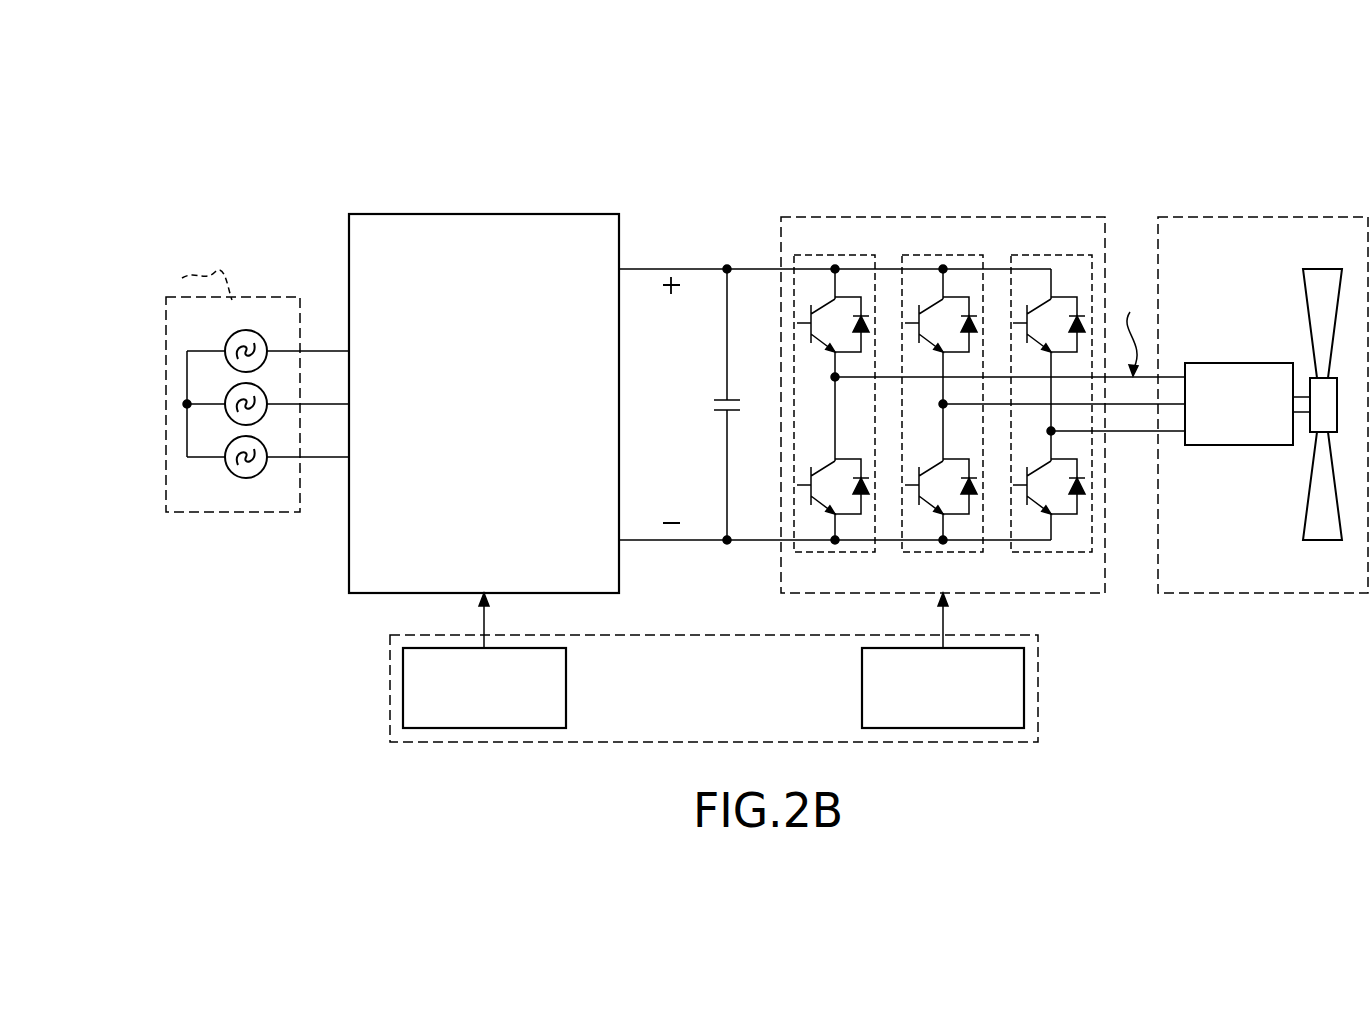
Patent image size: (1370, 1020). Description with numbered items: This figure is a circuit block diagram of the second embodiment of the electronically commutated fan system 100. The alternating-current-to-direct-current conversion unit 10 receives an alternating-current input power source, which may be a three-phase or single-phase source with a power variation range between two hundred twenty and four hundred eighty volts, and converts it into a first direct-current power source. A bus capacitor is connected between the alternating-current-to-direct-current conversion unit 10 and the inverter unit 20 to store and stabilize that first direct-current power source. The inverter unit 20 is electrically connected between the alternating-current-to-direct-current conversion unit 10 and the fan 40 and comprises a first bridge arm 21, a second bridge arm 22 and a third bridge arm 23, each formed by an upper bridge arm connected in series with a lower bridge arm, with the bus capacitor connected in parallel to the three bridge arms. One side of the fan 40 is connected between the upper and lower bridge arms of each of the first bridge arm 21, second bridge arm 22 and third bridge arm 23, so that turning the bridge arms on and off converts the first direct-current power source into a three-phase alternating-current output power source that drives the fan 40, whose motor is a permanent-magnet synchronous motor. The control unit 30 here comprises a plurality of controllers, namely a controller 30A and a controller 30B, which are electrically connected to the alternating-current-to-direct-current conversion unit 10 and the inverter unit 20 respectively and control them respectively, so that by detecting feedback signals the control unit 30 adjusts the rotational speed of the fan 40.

The electronically commutated fan system 100 is at (785, 52).
The alternating-current-to-direct-current conversion unit 10 is at (485, 216).
The inverter unit 20 is at (944, 220).
The first bridge arm 21 is at (833, 262).
The second bridge arm 22 is at (943, 262).
The third bridge arm 23 is at (1051, 262).
The control unit 30 is at (714, 638).
The controller 30A is at (410, 688).
The controller 30B is at (1017, 688).
The fan 40 is at (1266, 217).